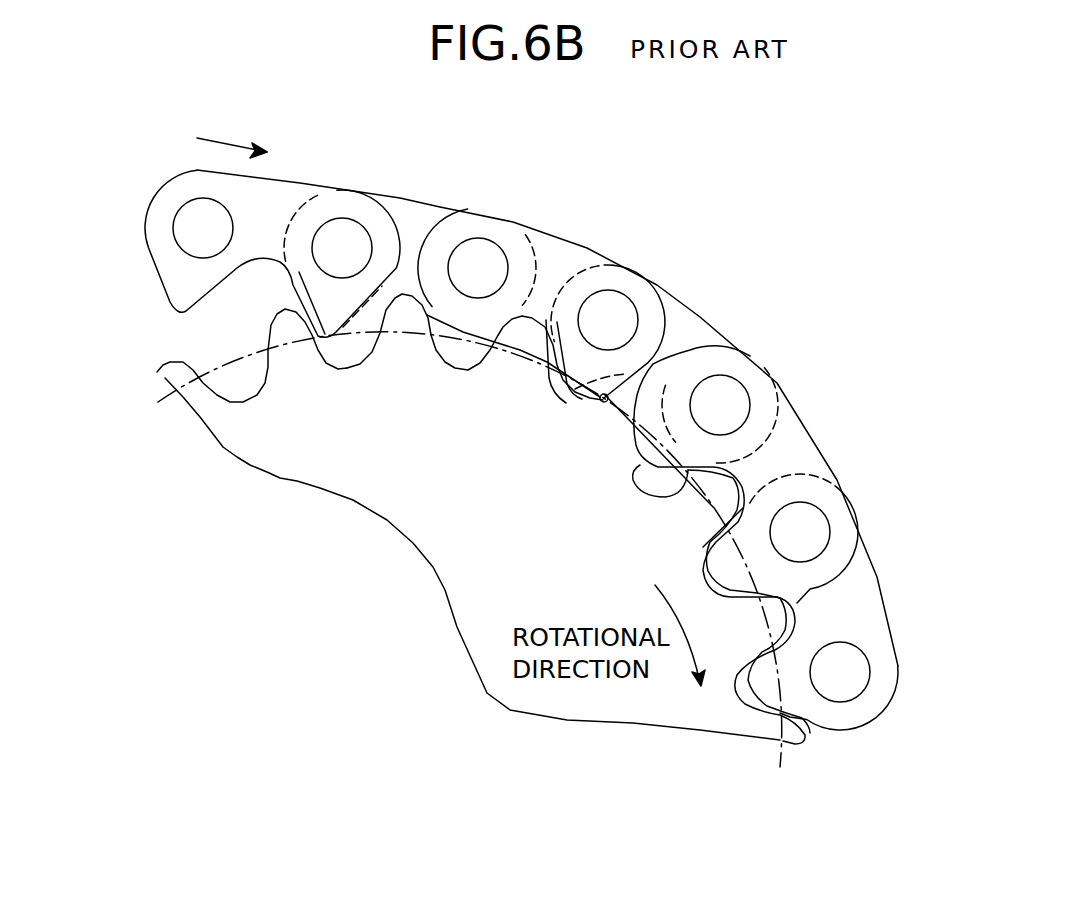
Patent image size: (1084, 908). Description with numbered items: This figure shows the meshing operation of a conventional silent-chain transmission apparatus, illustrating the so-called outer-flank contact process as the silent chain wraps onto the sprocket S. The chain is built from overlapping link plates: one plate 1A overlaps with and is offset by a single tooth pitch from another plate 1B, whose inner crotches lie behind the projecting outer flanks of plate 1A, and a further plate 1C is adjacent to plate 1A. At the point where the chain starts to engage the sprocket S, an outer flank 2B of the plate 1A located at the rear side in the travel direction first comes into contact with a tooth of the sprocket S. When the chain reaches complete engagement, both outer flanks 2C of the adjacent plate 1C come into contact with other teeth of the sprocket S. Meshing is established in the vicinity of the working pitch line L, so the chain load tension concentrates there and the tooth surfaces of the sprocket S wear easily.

The plate 1A is at (296, 182).
The plate 1B is at (446, 207).
The plate 1C is at (586, 247).
The outer flank 2B is at (297, 295).
The outer flanks 2C is at (420, 336).
The sprocket S is at (468, 517).
The working pitch line L is at (776, 750).